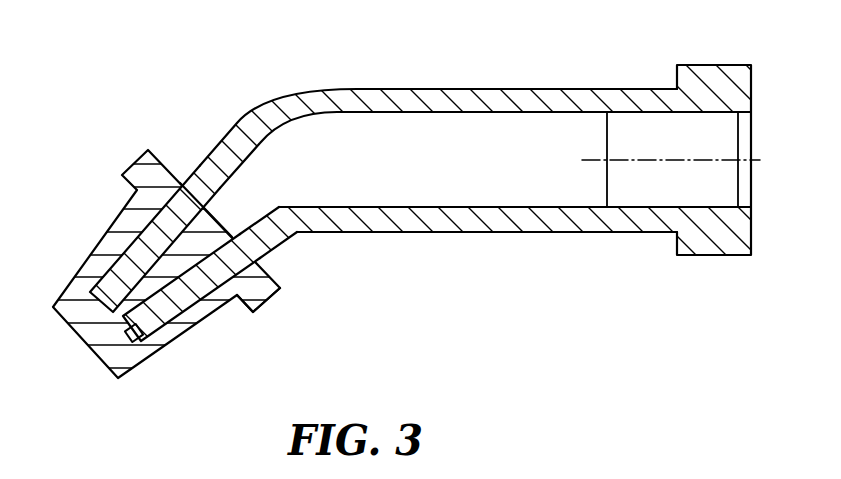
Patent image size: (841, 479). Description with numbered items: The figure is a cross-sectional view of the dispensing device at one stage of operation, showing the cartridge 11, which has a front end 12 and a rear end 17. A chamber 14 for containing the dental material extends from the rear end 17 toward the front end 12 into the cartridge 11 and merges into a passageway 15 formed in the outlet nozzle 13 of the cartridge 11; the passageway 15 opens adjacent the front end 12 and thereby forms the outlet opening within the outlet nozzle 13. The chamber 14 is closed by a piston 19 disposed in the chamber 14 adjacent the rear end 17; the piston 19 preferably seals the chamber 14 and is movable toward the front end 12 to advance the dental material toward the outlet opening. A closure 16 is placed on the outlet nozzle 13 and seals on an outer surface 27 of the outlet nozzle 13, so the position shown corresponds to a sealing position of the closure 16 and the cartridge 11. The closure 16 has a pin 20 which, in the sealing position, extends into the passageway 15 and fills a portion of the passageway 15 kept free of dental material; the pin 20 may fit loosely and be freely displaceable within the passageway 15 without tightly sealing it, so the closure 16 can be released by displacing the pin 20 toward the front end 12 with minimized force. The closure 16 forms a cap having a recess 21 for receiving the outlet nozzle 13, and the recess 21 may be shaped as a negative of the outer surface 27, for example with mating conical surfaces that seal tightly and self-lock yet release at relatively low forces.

The cartridge 11 is at (462, 98).
The front end 12 is at (40, 365).
The outlet nozzle 13 is at (197, 163).
The chamber 14 is at (518, 162).
The passageway 15 is at (247, 203).
The closure 16 is at (177, 328).
The rear end 17 is at (790, 119).
The piston 19 is at (655, 142).
The pin 20 is at (198, 246).
The recess 21 is at (132, 342).
The outer surface 27 is at (259, 286).